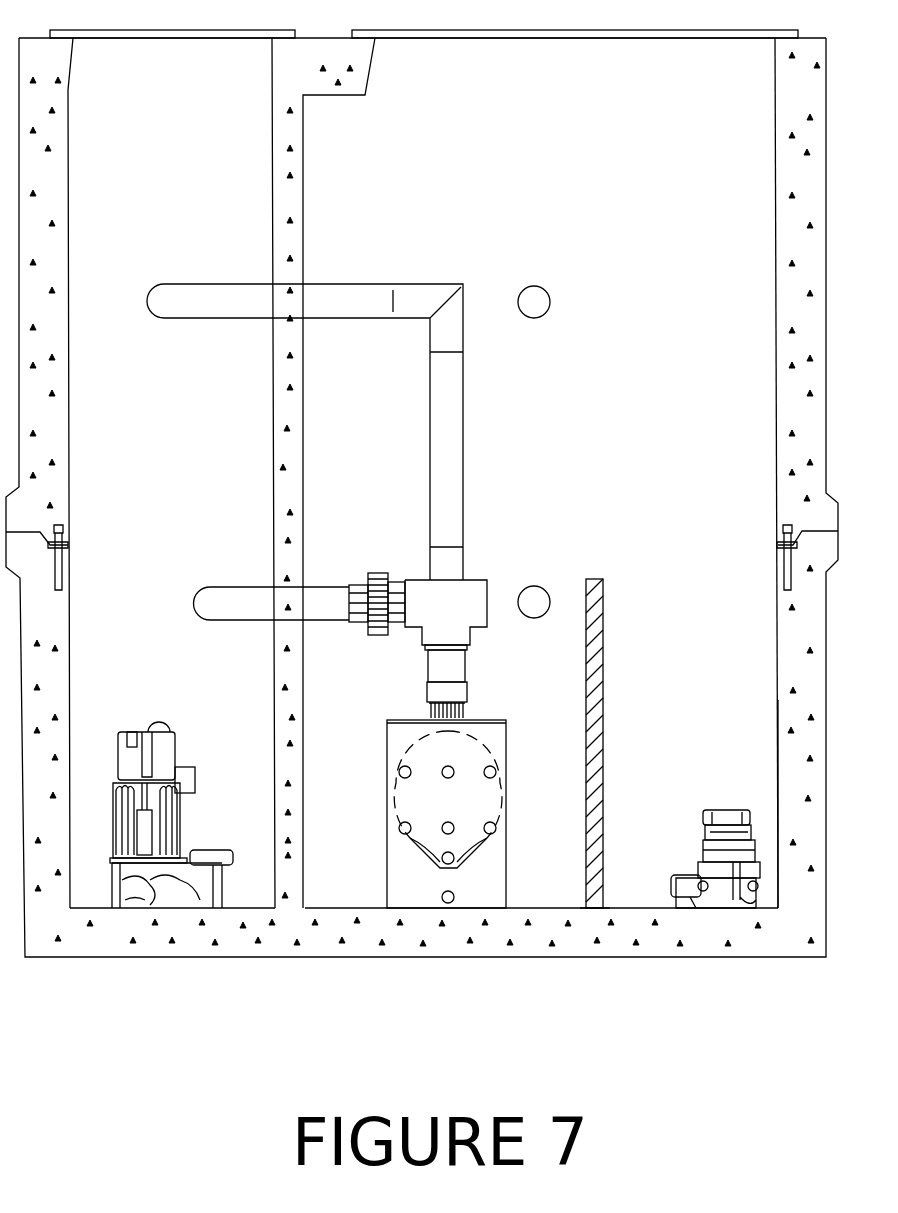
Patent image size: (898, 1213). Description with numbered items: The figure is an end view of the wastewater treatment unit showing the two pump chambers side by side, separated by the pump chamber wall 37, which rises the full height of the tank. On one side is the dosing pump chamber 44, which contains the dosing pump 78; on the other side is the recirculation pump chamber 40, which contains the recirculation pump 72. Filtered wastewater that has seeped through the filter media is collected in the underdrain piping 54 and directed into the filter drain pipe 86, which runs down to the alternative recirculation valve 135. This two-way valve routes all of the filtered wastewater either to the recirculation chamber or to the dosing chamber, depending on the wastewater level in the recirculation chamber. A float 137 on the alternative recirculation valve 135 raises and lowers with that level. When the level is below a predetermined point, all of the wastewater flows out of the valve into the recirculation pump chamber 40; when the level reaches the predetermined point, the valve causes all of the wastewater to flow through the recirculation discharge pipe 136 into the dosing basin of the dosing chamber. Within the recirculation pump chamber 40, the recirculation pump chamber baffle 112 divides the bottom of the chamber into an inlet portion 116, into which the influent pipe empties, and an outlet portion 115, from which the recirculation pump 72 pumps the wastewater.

The pump chamber wall 37 is at (278, 510).
The recirculation pump chamber 40 is at (634, 387).
The dosing pump chamber 44 is at (163, 461).
The underdrain piping 54 is at (543, 282).
The recirculation pump 72 is at (708, 908).
The dosing pump 78 is at (160, 908).
The filter drain pipe 86 is at (362, 284).
The recirculation pump chamber baffle 112 is at (598, 908).
The outlet portion 115 is at (695, 695).
The inlet portion 116 is at (555, 665).
The alternative recirculation valve 135 is at (414, 824).
The recirculation discharge pipe 136 is at (218, 622).
The float 137 is at (402, 795).